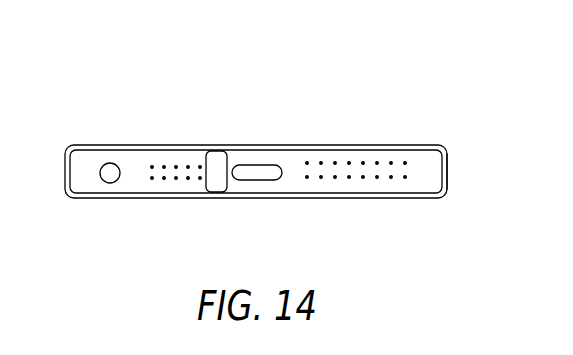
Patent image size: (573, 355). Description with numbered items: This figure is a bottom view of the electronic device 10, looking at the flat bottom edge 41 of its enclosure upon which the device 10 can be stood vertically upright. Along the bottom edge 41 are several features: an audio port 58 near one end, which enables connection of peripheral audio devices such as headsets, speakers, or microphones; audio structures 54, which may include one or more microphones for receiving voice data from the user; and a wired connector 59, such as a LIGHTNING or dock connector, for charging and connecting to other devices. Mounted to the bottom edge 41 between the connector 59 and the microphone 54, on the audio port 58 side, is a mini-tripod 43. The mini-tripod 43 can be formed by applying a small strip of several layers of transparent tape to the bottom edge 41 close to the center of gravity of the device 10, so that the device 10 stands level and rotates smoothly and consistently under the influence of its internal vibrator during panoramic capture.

The electronic device 10 is at (433, 134).
The bottom edge 41 is at (445, 168).
The mini-tripod 43 is at (218, 150).
The audio structures 54 is at (177, 160).
The audio port 58 is at (108, 162).
The connector 59 is at (271, 153).